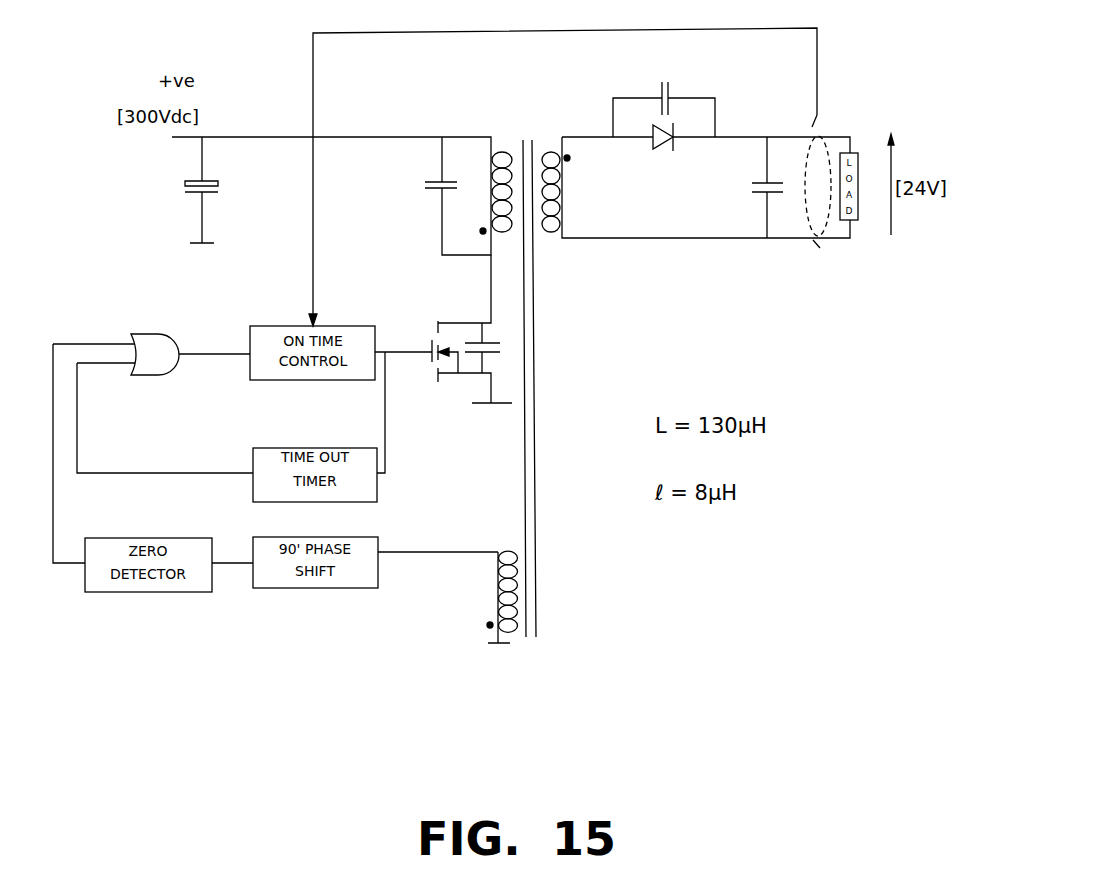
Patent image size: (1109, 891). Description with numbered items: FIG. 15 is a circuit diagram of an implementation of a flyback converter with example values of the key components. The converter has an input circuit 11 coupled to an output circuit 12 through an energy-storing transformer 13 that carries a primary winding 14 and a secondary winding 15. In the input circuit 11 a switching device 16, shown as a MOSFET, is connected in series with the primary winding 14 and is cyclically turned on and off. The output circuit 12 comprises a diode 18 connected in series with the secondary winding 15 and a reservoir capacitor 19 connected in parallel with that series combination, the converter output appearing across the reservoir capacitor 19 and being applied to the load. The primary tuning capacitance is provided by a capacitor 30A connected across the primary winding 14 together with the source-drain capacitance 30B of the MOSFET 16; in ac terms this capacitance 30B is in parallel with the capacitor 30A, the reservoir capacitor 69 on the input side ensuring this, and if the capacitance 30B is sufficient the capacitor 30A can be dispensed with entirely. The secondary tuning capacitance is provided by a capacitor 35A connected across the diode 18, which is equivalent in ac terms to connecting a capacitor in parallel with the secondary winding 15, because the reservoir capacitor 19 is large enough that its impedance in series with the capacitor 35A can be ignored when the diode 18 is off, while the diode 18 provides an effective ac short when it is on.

The input circuit 11 is at (283, 230).
The output circuit 12 is at (705, 200).
The energy-storing transformer 13 is at (552, 240).
The primary winding 14 is at (504, 150).
The secondary winding 15 is at (549, 150).
The switching device 16 is at (433, 378).
The diode 18 is at (660, 151).
The reservoir capacitor 19 is at (768, 197).
The capacitor 30A is at (432, 190).
The source-drain capacitance 30B is at (490, 353).
The capacitor 35A is at (671, 80).
The reservoir capacitor 69 is at (190, 195).